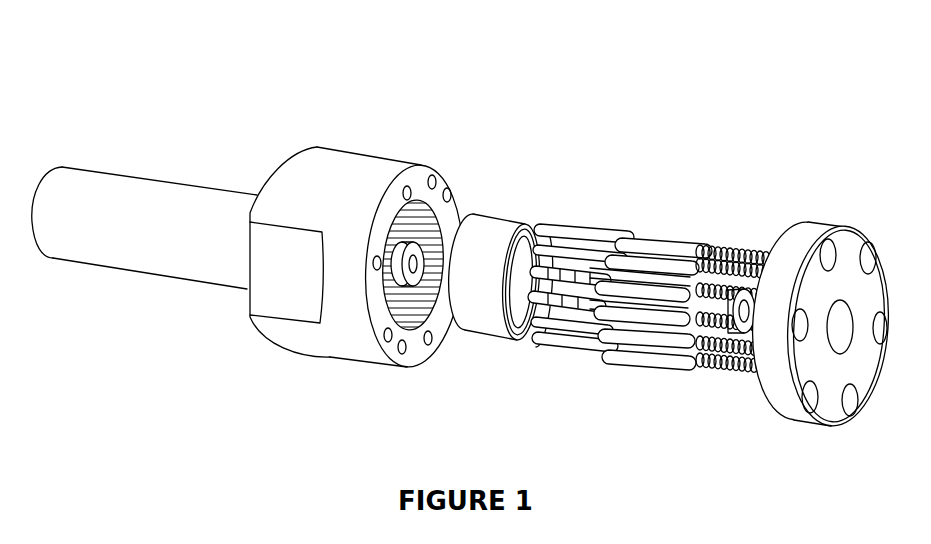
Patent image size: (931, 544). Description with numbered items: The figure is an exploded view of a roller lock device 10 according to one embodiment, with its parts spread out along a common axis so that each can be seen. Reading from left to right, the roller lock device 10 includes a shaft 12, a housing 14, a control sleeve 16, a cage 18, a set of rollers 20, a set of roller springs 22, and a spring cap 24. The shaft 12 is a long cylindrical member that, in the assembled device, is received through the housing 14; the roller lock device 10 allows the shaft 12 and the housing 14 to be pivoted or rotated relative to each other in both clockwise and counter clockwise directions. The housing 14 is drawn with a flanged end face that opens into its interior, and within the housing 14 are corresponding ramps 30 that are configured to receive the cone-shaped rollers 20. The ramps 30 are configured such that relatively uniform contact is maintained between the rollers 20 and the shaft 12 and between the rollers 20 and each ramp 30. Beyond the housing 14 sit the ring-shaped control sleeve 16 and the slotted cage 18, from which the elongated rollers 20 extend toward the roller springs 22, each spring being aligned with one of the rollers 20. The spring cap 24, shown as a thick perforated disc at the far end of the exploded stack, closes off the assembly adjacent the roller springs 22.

The roller lock device 10 is at (322, 75).
The shaft 12 is at (193, 190).
The housing 14 is at (376, 238).
The control sleeve 16 is at (503, 217).
The cage 18 is at (577, 237).
The rollers 20 is at (668, 238).
The roller springs 22 is at (737, 250).
The spring cap 24 is at (830, 223).
The ramps 30 is at (430, 223).